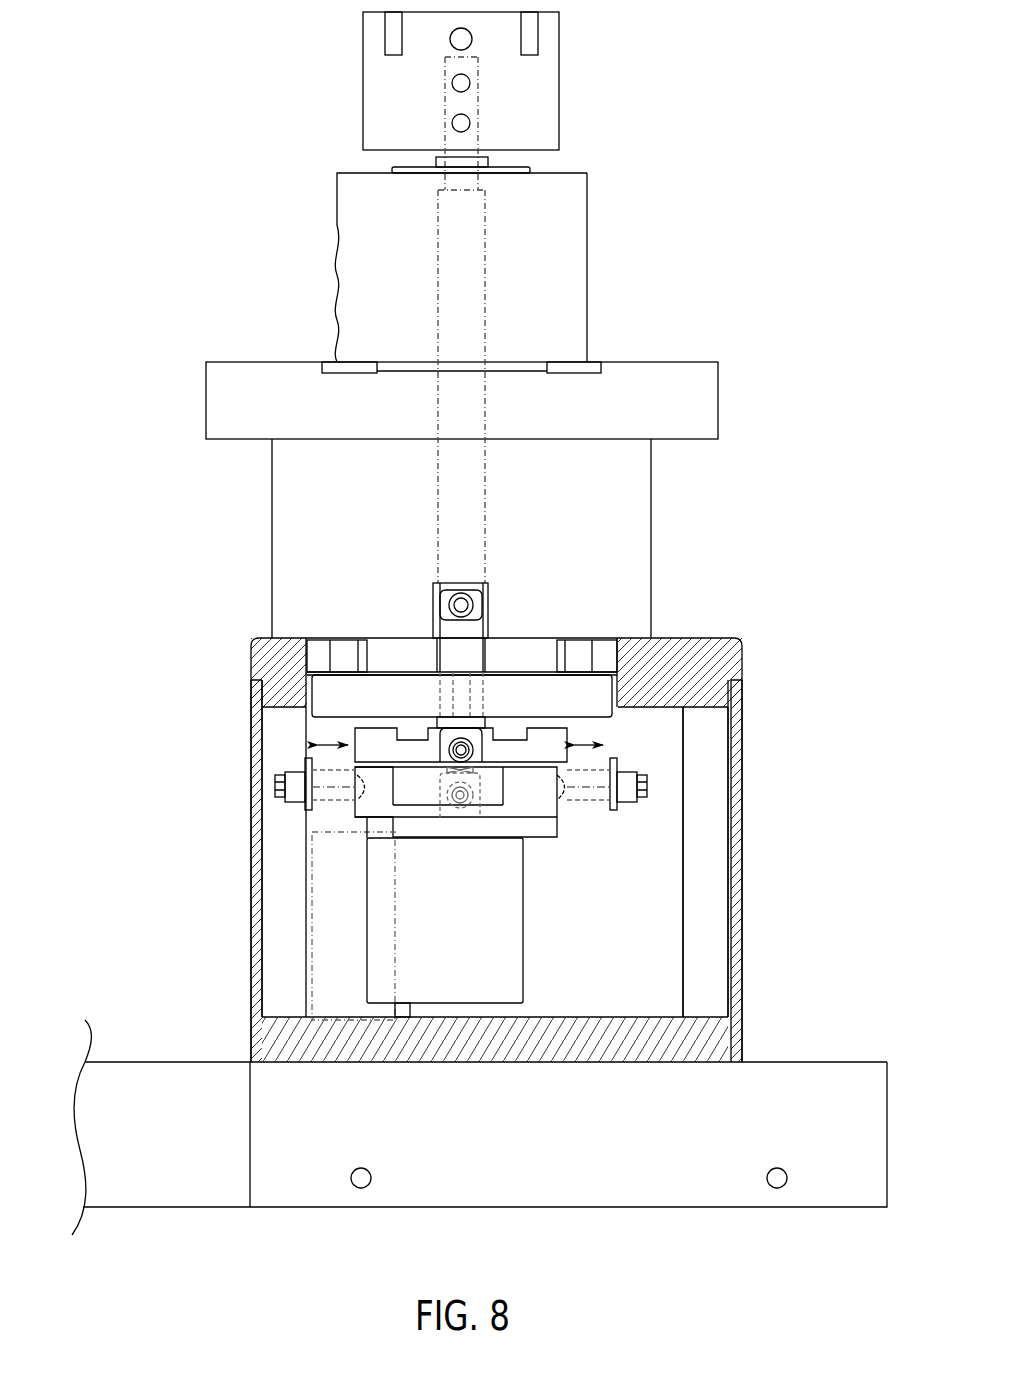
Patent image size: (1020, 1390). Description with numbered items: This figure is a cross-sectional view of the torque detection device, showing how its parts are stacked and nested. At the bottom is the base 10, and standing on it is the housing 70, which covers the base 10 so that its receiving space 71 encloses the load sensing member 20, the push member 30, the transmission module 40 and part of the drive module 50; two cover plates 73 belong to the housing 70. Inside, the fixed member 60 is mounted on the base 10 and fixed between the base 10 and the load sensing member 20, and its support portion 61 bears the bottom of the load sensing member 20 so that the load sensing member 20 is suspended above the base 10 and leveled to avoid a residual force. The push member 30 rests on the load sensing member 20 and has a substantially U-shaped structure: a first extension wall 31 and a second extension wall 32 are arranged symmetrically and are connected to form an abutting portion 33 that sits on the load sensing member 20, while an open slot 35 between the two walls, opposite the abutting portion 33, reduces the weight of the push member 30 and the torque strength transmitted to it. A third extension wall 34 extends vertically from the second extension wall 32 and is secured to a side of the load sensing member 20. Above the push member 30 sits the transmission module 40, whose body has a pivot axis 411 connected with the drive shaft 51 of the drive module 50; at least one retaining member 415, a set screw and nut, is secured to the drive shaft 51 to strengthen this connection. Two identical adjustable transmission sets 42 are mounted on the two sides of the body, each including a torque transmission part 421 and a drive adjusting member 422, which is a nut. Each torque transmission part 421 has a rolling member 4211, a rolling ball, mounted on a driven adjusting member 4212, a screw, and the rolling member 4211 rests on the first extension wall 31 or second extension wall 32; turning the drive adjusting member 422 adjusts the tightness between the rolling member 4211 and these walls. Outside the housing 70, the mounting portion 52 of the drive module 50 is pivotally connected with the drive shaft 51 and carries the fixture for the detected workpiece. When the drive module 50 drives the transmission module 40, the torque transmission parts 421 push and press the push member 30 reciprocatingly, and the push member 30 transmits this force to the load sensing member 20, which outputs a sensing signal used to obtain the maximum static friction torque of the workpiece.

The base 10 is at (615, 1125).
The load sensing member 20 is at (526, 966).
The push member 30 is at (374, 794).
The first extension wall 31 is at (530, 793).
The second extension wall 32 is at (380, 797).
The abutting portion 33 is at (463, 840).
The third extension wall 34 is at (380, 887).
The open slot 35 is at (420, 783).
The transmission module 40 is at (552, 739).
The pivot axis 411 is at (374, 647).
The drive shaft 51 is at (453, 715).
The retaining member 415 is at (473, 738).
The adjustable transmission set 42 is at (356, 788).
The torque transmission part 421 is at (382, 811).
The rolling member 4211 is at (367, 800).
The driven adjusting member 4212 is at (275, 785).
The drive adjusting member 422 is at (295, 777).
The drive module 50 is at (720, 400).
The mounting portion 52 is at (563, 100).
The fixed member 60 is at (324, 981).
The support portion 61 is at (403, 1012).
The housing 70 is at (522, 795).
The receiving space 71 is at (645, 942).
The cover plate 73 is at (742, 772).